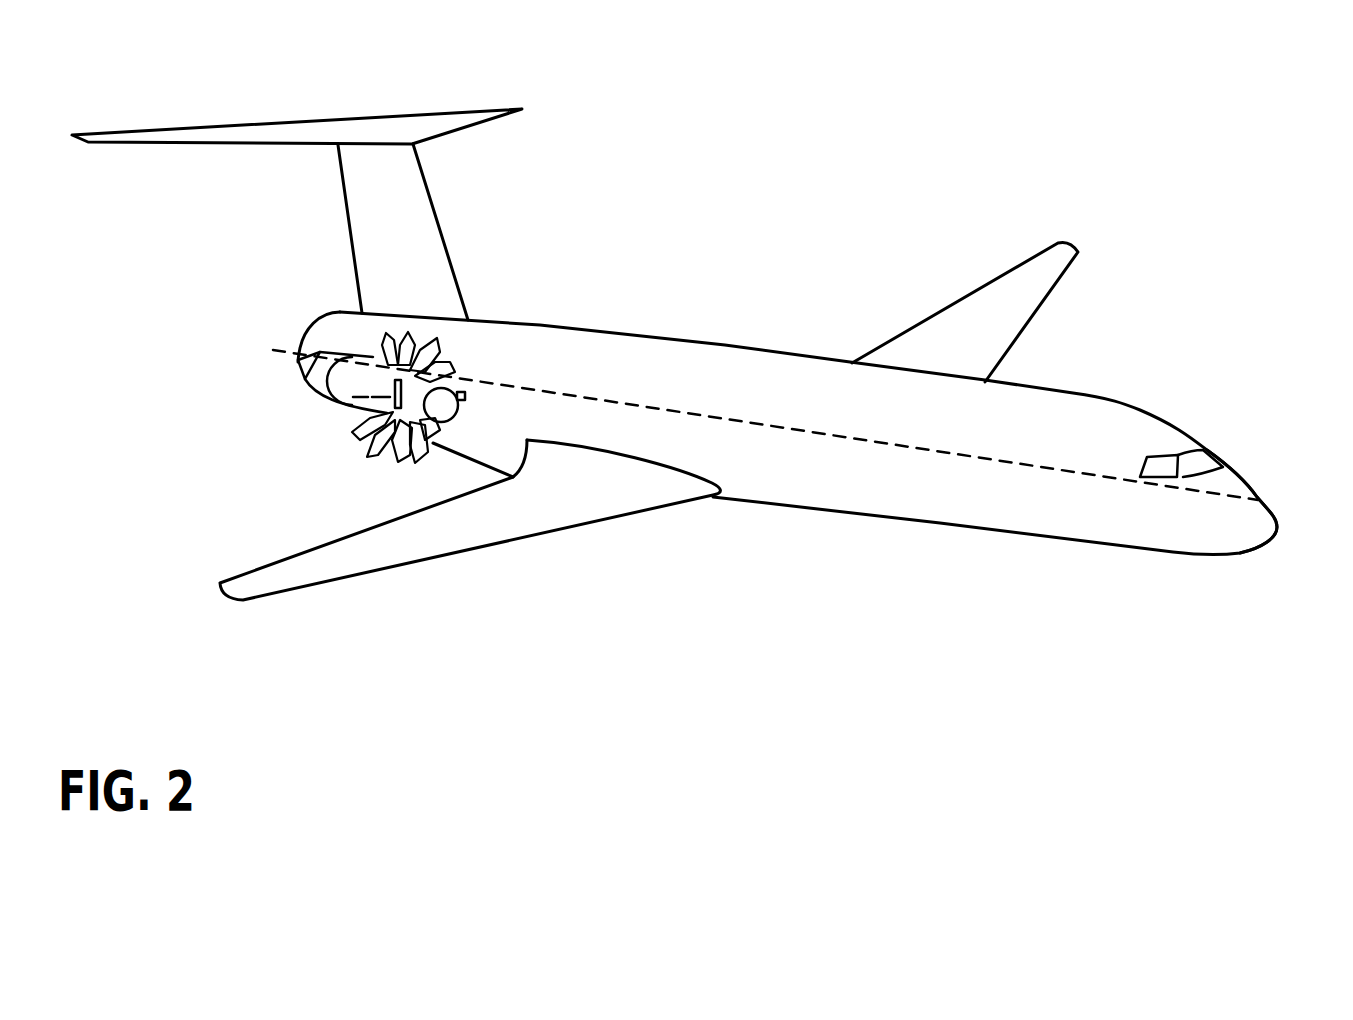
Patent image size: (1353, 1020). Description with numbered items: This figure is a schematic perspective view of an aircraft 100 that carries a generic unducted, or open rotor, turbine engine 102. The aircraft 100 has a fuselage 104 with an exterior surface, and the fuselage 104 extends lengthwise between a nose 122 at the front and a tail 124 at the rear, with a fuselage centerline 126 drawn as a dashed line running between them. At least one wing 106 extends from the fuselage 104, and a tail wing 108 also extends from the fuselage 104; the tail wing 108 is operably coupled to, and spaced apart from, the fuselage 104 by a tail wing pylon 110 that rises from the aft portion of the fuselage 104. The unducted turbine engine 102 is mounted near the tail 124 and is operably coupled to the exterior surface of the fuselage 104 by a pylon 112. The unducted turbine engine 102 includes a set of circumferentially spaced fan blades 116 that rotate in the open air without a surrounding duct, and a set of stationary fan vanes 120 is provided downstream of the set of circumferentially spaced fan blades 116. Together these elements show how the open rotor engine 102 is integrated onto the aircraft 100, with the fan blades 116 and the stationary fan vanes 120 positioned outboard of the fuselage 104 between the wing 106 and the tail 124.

The aircraft 100 is at (1128, 142).
The unducted turbine engine 102 is at (338, 416).
The fuselage 104 is at (725, 345).
The wing 106 is at (393, 567).
The tail wing 108 is at (283, 124).
The tail wing pylon 110 is at (441, 222).
The pylon 112 is at (460, 390).
The set of circumferentially spaced fan blades 116 is at (405, 378).
The set of stationary fan vanes 120 is at (390, 352).
The nose 122 is at (1277, 523).
The tail 124 is at (318, 317).
The fuselage centerline 126 is at (1037, 463).